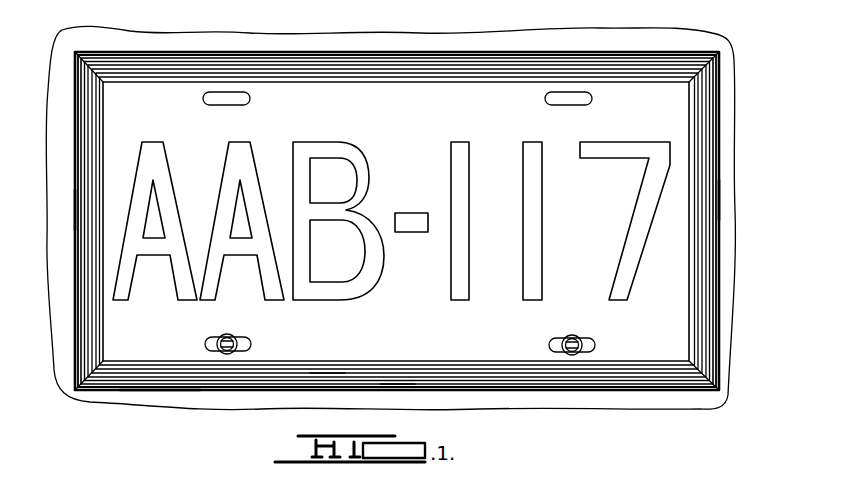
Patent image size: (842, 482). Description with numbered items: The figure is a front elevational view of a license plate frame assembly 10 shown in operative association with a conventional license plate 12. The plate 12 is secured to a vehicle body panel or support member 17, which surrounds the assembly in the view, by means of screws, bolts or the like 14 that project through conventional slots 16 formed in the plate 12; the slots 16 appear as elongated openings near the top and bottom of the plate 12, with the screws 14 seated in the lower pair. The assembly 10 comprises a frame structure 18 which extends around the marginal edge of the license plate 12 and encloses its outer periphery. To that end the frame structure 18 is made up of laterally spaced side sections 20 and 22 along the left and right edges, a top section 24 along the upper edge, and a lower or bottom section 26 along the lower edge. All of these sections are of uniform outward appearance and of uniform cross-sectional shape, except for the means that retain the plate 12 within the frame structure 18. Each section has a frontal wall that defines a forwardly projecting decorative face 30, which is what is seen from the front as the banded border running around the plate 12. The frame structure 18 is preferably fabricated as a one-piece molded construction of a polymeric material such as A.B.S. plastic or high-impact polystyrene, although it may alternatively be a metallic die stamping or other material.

The license plate frame assembly 10 is at (722, 114).
The license plate 12 is at (663, 277).
The screws 14 is at (216, 336).
The slots 16 is at (250, 99).
The vehicle body panel 17 is at (54, 291).
The frame structure 18 is at (156, 392).
The side section 20 is at (86, 200).
The side section 22 is at (710, 205).
The top section 24 is at (405, 64).
The bottom section 26 is at (390, 373).
The decorative face 30 is at (323, 376).